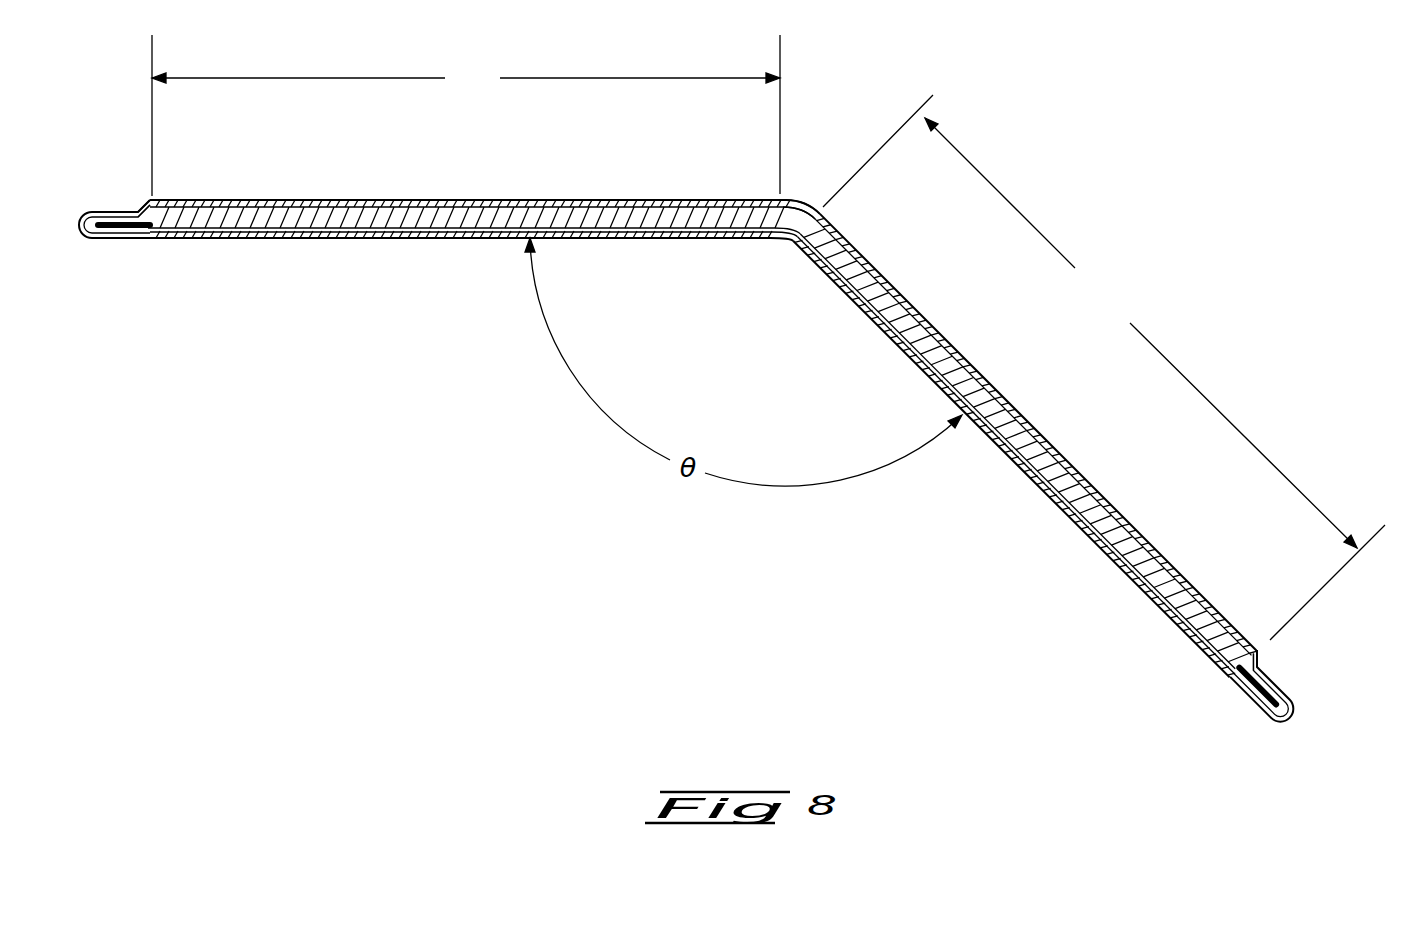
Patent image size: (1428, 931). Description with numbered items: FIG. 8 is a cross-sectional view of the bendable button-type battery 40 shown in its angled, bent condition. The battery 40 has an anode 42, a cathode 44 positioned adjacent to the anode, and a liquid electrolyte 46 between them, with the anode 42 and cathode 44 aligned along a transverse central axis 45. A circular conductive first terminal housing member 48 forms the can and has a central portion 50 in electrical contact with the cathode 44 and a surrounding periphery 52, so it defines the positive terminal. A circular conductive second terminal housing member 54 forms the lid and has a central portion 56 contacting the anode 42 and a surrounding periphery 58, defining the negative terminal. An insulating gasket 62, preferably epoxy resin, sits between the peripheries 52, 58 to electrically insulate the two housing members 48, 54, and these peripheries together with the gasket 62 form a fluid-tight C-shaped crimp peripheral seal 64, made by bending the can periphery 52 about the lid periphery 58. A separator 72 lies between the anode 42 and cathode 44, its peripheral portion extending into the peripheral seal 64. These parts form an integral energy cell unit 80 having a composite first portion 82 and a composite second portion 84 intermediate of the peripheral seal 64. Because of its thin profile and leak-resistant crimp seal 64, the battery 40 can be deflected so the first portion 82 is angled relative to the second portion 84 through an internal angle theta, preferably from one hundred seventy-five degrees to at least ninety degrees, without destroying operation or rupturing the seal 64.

The button-type battery 40 is at (493, 172).
The anode 42 is at (758, 203).
The cathode 44 is at (705, 240).
The transverse central axis 45 is at (781, 145).
The liquid electrolyte 46 is at (150, 233).
The first terminal housing member 48 is at (1025, 486).
The central portion 50 is at (883, 328).
The periphery 52 is at (110, 232).
The second terminal housing member 54 is at (1038, 416).
The central portion 56 is at (884, 281).
The periphery 58 is at (120, 214).
The insulating gasket 62 is at (95, 210).
The fluid-tight peripheral seal 64 is at (1320, 680).
The separator 72 is at (1127, 532).
The energy cell unit 80 is at (686, 194).
The first portion 82 is at (1104, 367).
The second portion 84 is at (466, 115).